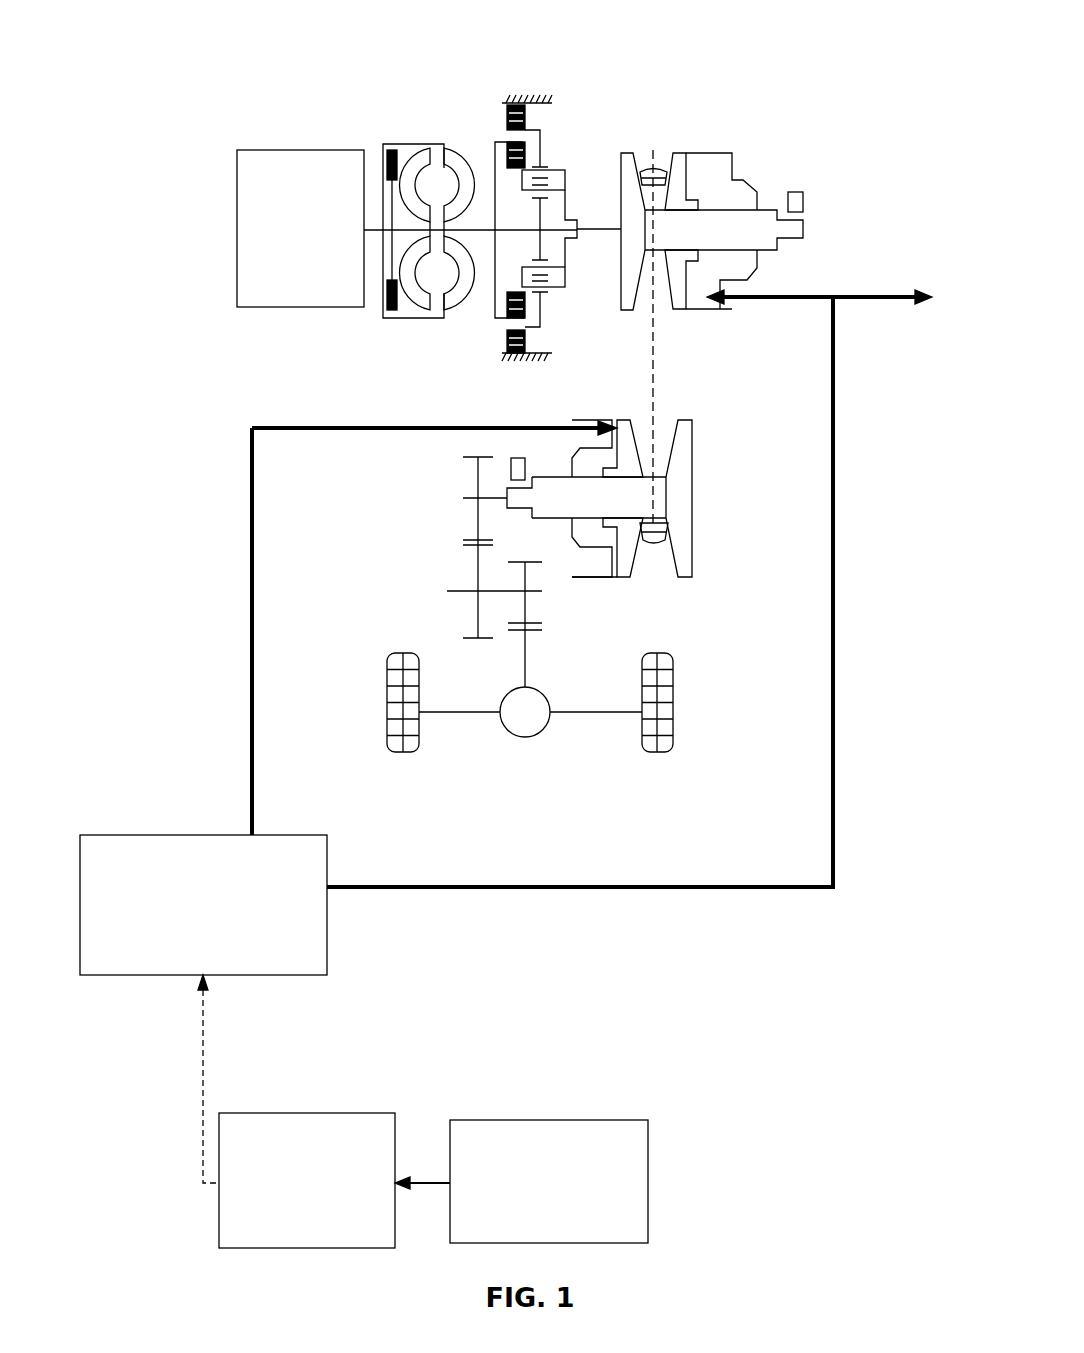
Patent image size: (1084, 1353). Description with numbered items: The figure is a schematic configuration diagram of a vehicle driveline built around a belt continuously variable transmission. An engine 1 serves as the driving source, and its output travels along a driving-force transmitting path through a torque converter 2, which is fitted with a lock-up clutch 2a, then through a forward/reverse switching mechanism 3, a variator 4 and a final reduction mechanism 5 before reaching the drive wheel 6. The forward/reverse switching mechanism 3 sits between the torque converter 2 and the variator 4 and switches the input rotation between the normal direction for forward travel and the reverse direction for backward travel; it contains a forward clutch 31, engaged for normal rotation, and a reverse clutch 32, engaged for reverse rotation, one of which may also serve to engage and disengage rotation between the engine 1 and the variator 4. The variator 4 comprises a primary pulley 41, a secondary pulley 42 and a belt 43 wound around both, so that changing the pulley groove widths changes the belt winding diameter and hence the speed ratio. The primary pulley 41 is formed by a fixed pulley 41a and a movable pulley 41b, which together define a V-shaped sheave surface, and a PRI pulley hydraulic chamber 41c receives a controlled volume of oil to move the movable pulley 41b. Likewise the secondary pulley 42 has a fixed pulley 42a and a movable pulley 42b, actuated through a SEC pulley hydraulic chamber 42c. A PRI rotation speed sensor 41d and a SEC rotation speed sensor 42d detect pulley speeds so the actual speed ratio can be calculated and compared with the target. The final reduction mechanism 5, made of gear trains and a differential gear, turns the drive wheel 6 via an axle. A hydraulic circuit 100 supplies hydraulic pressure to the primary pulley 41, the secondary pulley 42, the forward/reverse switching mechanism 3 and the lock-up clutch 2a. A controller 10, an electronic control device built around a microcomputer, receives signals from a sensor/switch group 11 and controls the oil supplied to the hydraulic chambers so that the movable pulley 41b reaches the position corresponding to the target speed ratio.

The engine 1 is at (287, 148).
The torque converter 2 is at (435, 112).
The lock-up clutch 2a is at (390, 150).
The forward/reverse switching mechanism 3 is at (515, 74).
The forward clutch 31 is at (500, 142).
The reverse clutch 32 is at (533, 96).
The variator 4 is at (651, 74).
The primary pulley 41 is at (752, 182).
The fixed pulley 41a is at (628, 152).
The movable pulley 41b is at (681, 152).
The PRI pulley hydraulic chamber 41c is at (720, 152).
The PRI rotation speed sensor 41d is at (804, 201).
The secondary pulley 42 is at (693, 547).
The fixed pulley 42a is at (693, 433).
The movable pulley 42b is at (627, 578).
The SEC pulley hydraulic chamber 42c is at (602, 547).
The SEC rotation speed sensor 42d is at (527, 456).
The belt 43 is at (657, 541).
The final reduction mechanism 5 is at (428, 562).
The drive wheel 6 is at (387, 718).
The controller 10 is at (335, 1113).
The sensor/switch group 11 is at (648, 1153).
The hydraulic circuit 100 is at (200, 835).